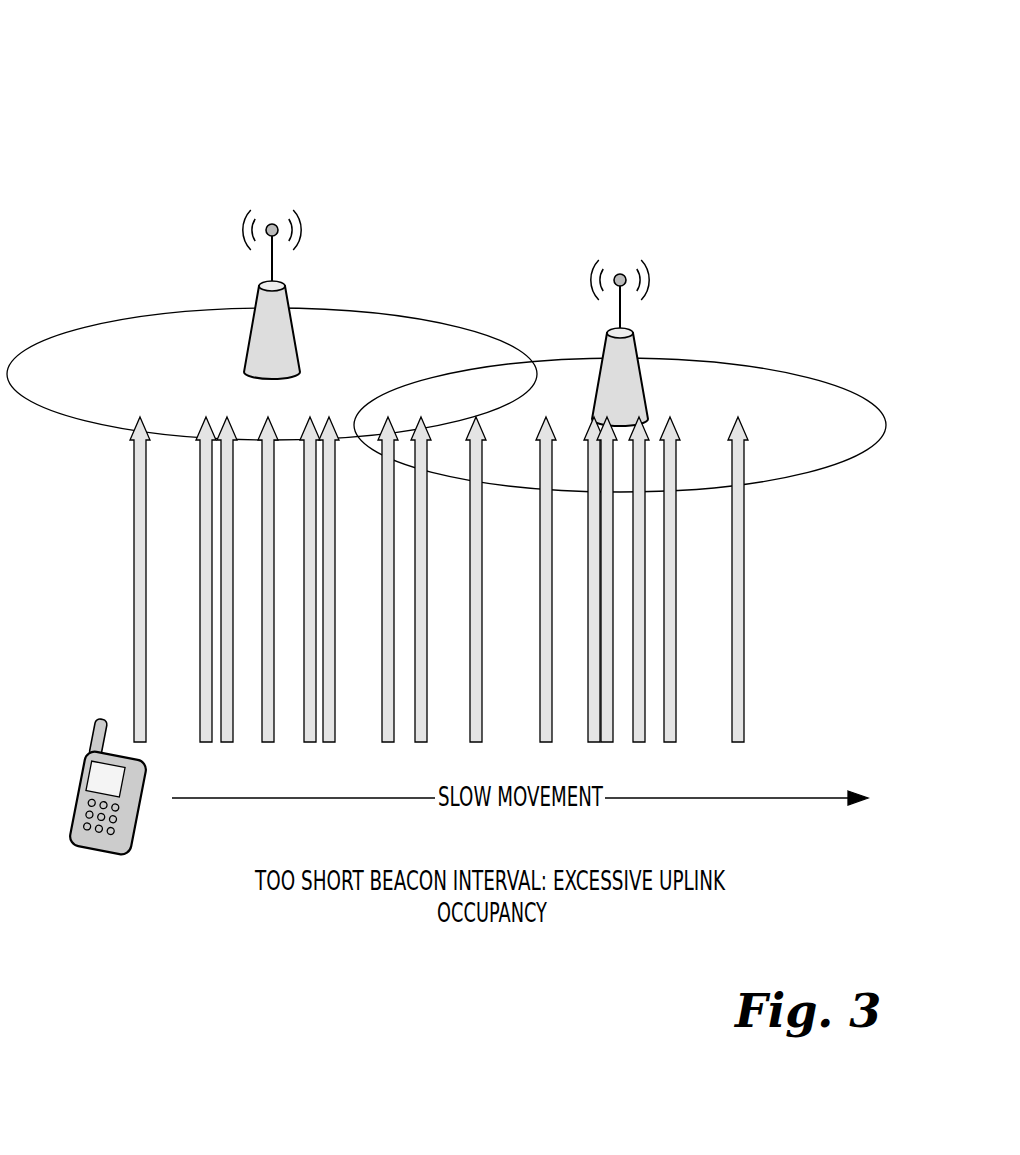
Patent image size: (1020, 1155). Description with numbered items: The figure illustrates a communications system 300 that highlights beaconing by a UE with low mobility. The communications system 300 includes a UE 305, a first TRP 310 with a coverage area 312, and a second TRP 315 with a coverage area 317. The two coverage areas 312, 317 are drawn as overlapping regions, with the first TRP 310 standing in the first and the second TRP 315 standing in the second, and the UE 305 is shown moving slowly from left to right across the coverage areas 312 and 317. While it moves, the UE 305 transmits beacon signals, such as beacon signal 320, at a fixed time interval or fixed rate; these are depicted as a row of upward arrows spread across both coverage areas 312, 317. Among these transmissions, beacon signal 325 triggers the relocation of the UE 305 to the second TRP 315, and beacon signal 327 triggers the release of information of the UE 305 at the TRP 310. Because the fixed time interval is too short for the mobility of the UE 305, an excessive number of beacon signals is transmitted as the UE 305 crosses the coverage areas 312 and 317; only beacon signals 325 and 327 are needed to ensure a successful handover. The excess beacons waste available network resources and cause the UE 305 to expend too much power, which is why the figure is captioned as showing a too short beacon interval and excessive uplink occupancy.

The communications system 300 is at (113, 57).
The UE 305 is at (76, 756).
The first TRP 310 is at (225, 279).
The coverage area 312 is at (92, 397).
The second TRP 315 is at (716, 329).
The coverage area 317 is at (861, 439).
The beacon signal 320 is at (489, 427).
The beacon signal 325 is at (388, 420).
The beacon signal 327 is at (474, 418).